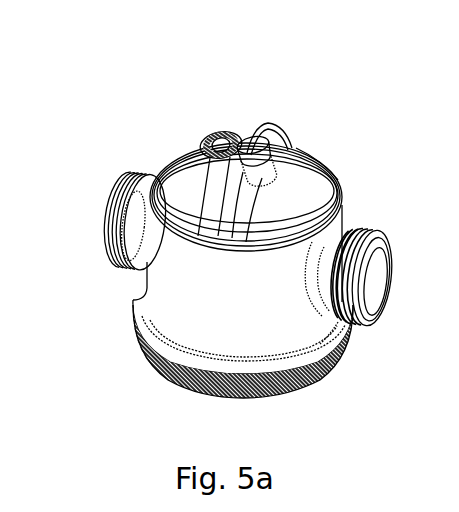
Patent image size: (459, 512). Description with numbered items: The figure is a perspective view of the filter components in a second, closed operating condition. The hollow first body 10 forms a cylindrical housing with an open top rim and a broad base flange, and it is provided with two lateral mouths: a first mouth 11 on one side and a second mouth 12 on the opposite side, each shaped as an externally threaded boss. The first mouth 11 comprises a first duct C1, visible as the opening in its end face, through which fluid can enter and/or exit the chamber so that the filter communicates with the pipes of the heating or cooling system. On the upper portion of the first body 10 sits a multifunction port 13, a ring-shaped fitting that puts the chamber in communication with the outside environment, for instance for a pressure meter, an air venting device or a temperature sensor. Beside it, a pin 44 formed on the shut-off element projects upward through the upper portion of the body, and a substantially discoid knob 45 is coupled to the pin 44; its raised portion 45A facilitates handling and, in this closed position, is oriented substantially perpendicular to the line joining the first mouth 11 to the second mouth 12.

The hollow first body 10 is at (126, 104).
The first mouth 11 is at (385, 243).
The second mouth 12 is at (112, 191).
The port 13 is at (219, 133).
The pin 44 is at (244, 137).
The knob 45 is at (311, 188).
The raised portion 45A is at (275, 140).
The first duct C1 is at (365, 281).